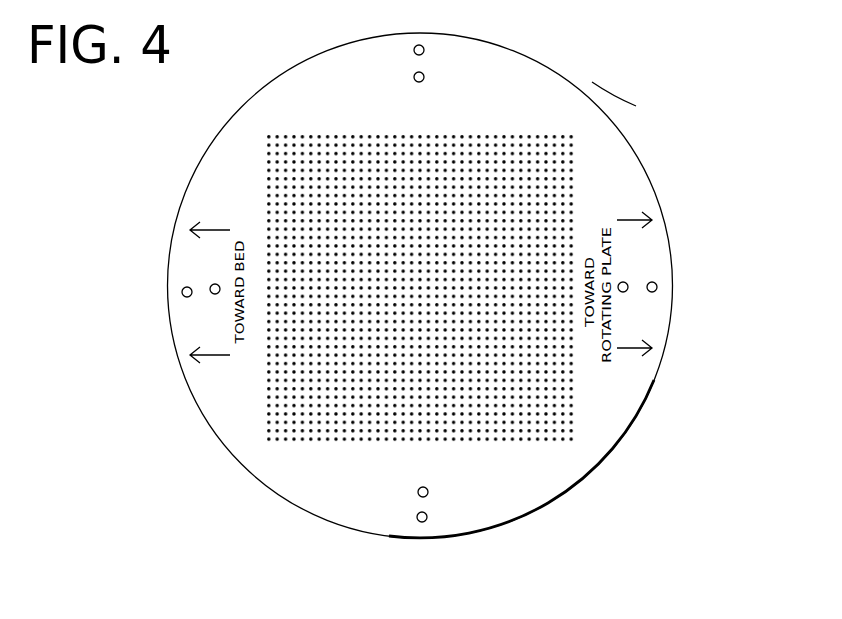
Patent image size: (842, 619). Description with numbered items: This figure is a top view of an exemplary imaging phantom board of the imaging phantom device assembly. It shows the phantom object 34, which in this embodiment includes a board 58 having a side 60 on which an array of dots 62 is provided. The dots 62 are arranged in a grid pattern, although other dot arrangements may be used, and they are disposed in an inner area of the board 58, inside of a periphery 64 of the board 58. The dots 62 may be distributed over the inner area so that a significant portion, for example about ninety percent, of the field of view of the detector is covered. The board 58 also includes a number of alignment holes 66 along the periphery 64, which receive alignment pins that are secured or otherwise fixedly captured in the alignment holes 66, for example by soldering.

The phantom object 34 is at (560, 55).
The board 58 is at (610, 117).
The side 60 is at (442, 73).
The dots 62 is at (578, 412).
The periphery 64 is at (555, 505).
The alignment holes 66 is at (214, 284).